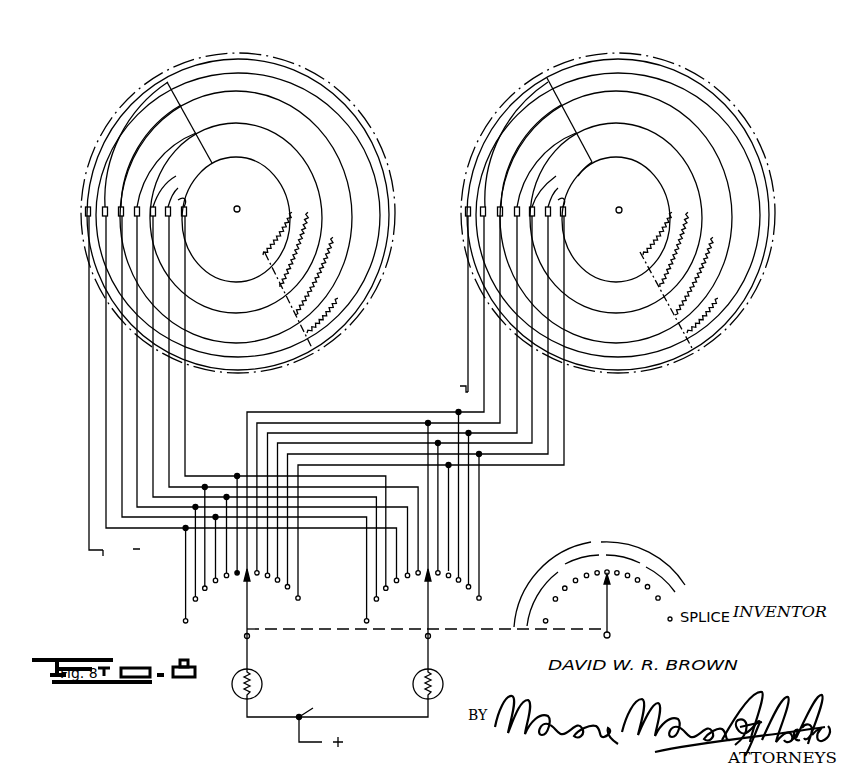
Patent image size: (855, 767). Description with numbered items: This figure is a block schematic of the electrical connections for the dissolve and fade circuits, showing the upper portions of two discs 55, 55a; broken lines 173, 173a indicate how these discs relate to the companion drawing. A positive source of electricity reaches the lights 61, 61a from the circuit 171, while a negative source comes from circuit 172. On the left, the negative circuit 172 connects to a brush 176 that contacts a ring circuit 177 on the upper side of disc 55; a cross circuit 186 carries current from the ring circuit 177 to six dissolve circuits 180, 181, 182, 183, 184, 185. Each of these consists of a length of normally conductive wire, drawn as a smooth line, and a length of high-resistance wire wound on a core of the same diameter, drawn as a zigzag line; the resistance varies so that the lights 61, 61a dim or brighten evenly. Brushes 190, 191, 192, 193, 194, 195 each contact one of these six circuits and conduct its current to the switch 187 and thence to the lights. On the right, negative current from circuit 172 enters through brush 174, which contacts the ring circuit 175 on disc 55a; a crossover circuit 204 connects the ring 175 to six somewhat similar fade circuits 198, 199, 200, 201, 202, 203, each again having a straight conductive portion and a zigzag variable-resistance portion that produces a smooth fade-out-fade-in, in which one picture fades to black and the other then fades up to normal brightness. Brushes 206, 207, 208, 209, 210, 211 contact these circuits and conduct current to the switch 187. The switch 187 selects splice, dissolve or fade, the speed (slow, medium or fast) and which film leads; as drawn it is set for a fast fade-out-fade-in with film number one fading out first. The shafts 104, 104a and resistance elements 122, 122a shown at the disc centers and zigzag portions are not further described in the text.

The disc 55 is at (358, 115).
The broken line 173 is at (335, 90).
The ring circuit 177 is at (115, 121).
The cross circuit 186 is at (172, 83).
The dissolve circuit 180 is at (144, 120).
The dissolve circuit 182 is at (156, 150).
The dissolve circuit 181 is at (241, 96).
The dissolve circuit 183 is at (248, 128).
The dissolve circuit 185 is at (247, 162).
The dissolve circuit 184 is at (175, 176).
The brush 193 is at (176, 188).
The brush 194 is at (176, 200).
The brush 195 is at (187, 216).
The brush 190 is at (104, 207).
The brush 191 is at (121, 207).
The brush 192 is at (134, 205).
The brush 176 is at (86, 210).
The shaft 104 is at (238, 212).
The resistance elements 122 is at (266, 258).
The disc 55a is at (740, 118).
The broken line 173a is at (720, 88).
The ring circuit 175 is at (504, 103).
The crossover circuit 204 is at (555, 88).
The fade circuit 198 is at (511, 130).
The fade circuit 200 is at (543, 146).
The fade circuit 202 is at (592, 162).
The fade circuit 199 is at (582, 104).
The fade circuit 201 is at (601, 133).
The fade circuit 203 is at (611, 167).
The brush 209 is at (517, 207).
The brush 210 is at (510, 199).
The brush 211 is at (481, 207).
The brush 174 is at (466, 212).
The brush 207 is at (556, 185).
The brush 206 is at (560, 200).
The brush 208 is at (550, 216).
The shaft 104a is at (620, 213).
The resistance elements 122a is at (645, 258).
The circuit 172 is at (458, 388).
The switch 187 is at (605, 630).
The light 61 is at (262, 684).
The light 61a is at (413, 686).
The circuit 171 is at (317, 711).